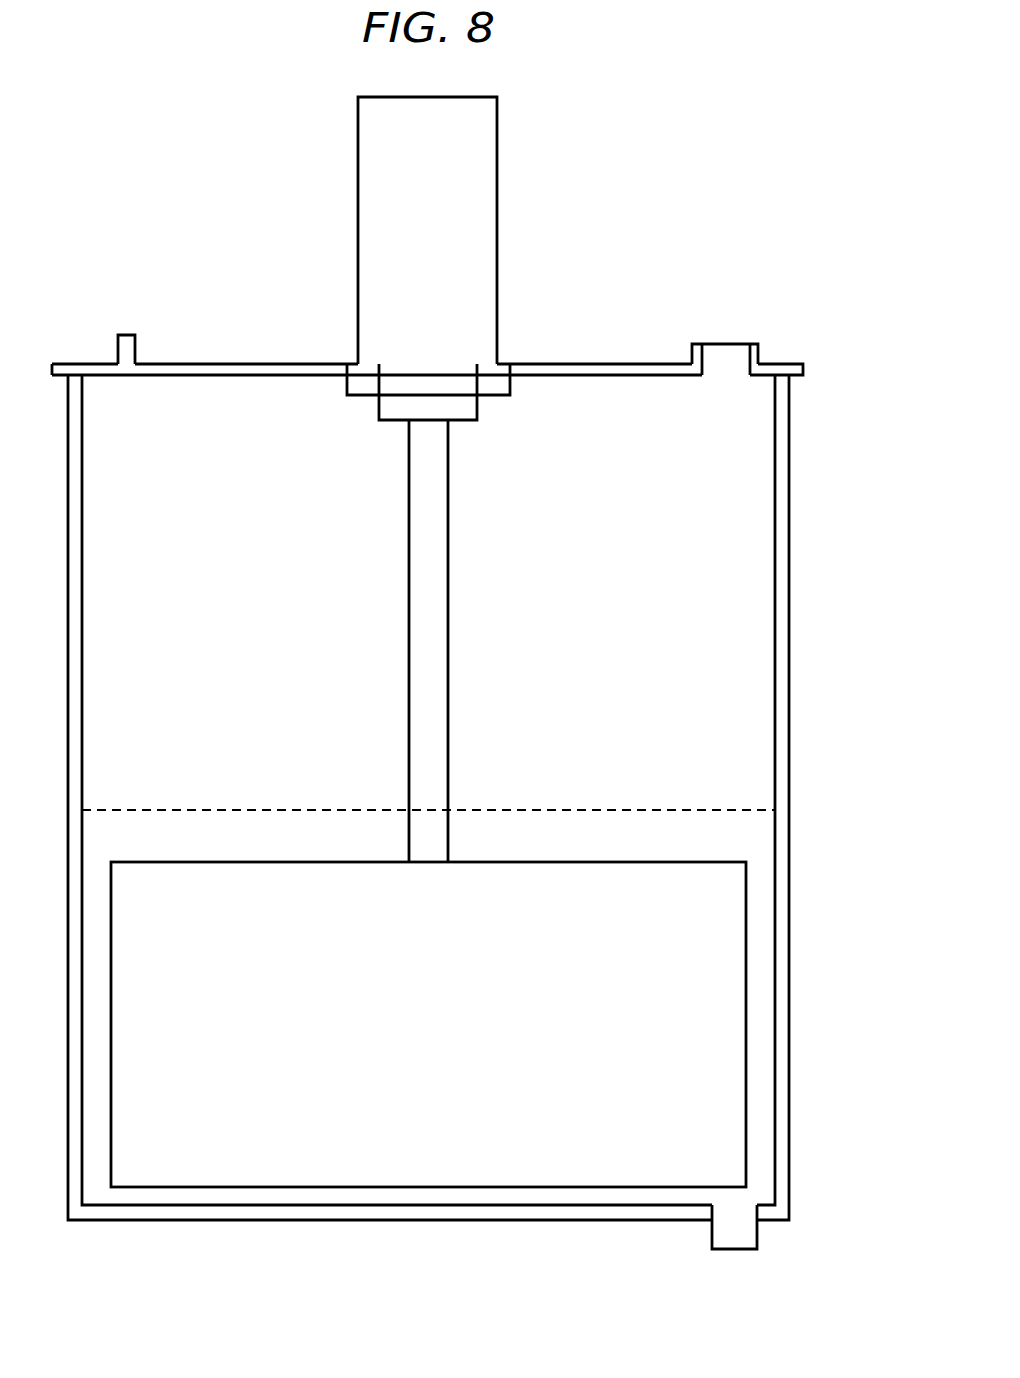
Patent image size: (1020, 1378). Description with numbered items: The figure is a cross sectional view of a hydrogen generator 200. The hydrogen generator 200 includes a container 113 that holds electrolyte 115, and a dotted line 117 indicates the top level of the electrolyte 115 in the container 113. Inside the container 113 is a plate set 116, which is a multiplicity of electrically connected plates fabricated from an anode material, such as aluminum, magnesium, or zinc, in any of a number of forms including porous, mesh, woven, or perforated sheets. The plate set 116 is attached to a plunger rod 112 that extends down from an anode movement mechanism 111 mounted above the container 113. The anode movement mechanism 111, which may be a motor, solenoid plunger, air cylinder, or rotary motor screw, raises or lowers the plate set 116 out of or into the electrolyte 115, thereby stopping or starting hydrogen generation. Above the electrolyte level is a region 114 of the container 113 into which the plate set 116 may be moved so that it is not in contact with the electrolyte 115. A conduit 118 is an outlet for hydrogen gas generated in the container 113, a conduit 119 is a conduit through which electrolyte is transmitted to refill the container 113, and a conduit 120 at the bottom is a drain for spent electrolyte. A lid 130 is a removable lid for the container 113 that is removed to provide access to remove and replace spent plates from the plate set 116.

The hydrogen generator 200 is at (200, 226).
The anode movement mechanism 111 is at (483, 234).
The plunger rod 112 is at (435, 566).
The container 113 is at (780, 481).
The region 114 is at (742, 638).
The electrolyte 115 is at (758, 931).
The plate set 116 is at (692, 1056).
The dotted line 117 is at (735, 810).
The conduit 118 is at (127, 333).
The conduit 119 is at (723, 342).
The conduit 120 is at (735, 1251).
The lid 130 is at (787, 360).